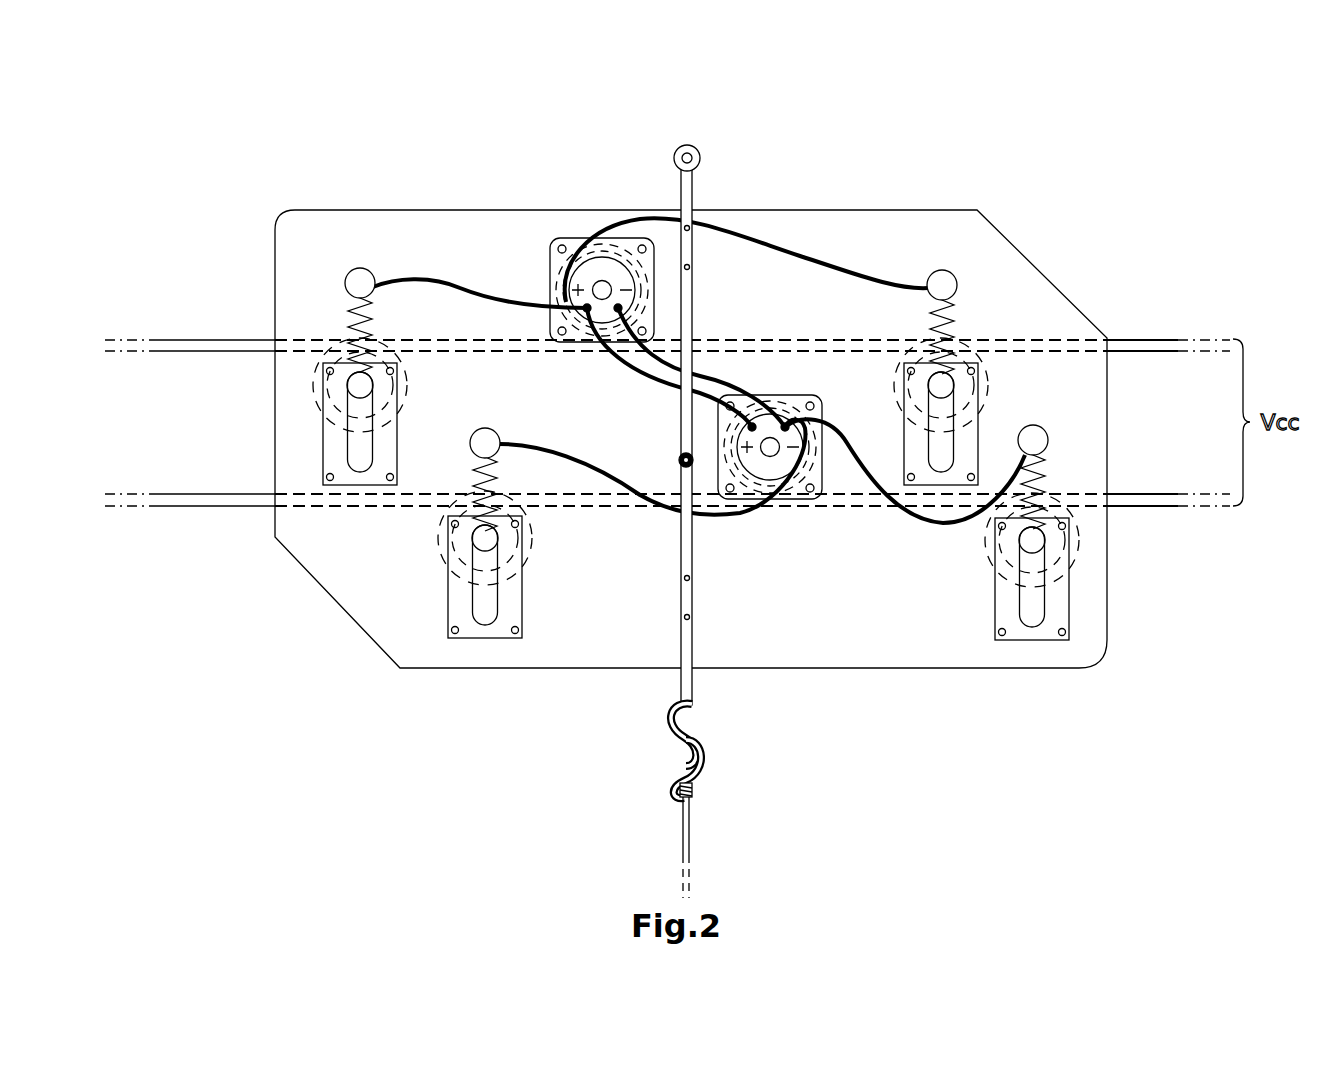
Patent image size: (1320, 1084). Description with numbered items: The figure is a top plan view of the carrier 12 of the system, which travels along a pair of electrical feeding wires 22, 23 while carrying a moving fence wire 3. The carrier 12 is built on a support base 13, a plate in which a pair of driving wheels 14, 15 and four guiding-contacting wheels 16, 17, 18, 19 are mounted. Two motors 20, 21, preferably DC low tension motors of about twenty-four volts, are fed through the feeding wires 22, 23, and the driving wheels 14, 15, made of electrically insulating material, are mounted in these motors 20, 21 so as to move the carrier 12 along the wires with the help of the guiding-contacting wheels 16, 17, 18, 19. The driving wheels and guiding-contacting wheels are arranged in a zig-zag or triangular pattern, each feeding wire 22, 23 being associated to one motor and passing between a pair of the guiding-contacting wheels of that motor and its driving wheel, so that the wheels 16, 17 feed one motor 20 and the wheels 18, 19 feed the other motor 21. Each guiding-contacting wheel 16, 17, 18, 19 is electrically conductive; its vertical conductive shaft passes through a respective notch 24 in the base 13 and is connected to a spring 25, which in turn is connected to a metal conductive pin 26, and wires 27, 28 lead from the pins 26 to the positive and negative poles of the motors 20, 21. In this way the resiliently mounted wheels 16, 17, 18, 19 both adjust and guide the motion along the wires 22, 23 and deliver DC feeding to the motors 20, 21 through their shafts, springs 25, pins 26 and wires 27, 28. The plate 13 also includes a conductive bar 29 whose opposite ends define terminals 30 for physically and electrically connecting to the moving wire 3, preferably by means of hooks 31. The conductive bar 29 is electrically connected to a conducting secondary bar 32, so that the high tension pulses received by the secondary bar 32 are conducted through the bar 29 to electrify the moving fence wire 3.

The moving wire 3 is at (689, 820).
The carrier 12 is at (788, 393).
The support base 13 is at (1023, 245).
The driving wheel 14 is at (592, 232).
The driving wheel 15 is at (825, 558).
The guiding-contacting wheel 16 is at (313, 383).
The guiding-contacting wheel 17 is at (988, 367).
The guiding-contacting wheel 18 is at (448, 612).
The guiding-contacting wheel 19 is at (1080, 550).
The motor 20 is at (557, 262).
The motor 21 is at (765, 470).
The electrical feeding wire 22 is at (183, 340).
The electrical feeding wire 23 is at (207, 507).
The notch 24 is at (348, 447).
The spring 25 is at (385, 325).
The metal conductive pin 26 is at (348, 283).
The wire 27 is at (483, 296).
The wire 28 is at (712, 382).
The conductive bar 29 is at (623, 446).
The terminal 30 is at (699, 166).
The hook 31 is at (700, 742).
The secondary bar 32 is at (679, 454).